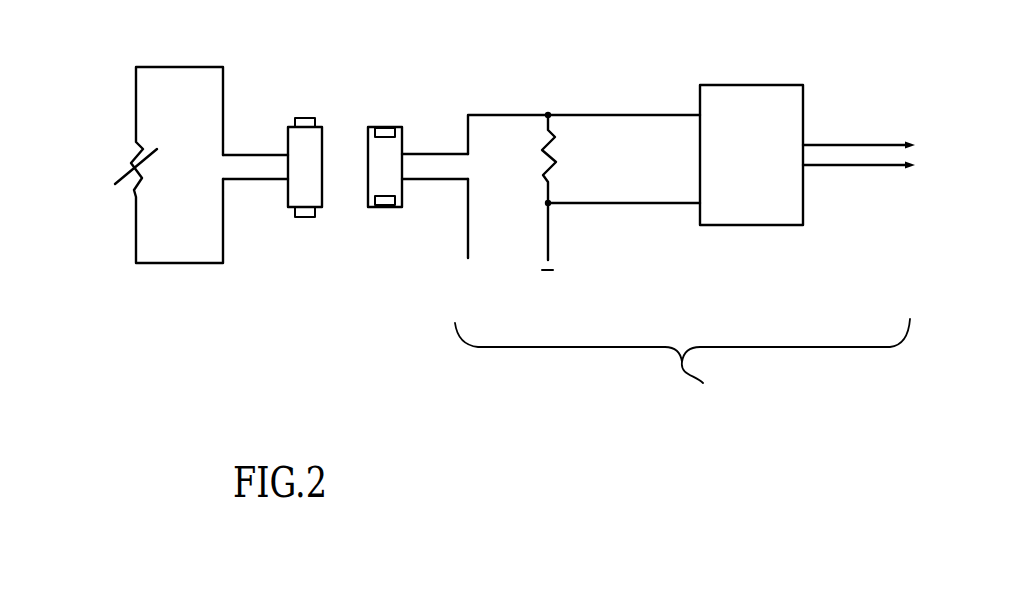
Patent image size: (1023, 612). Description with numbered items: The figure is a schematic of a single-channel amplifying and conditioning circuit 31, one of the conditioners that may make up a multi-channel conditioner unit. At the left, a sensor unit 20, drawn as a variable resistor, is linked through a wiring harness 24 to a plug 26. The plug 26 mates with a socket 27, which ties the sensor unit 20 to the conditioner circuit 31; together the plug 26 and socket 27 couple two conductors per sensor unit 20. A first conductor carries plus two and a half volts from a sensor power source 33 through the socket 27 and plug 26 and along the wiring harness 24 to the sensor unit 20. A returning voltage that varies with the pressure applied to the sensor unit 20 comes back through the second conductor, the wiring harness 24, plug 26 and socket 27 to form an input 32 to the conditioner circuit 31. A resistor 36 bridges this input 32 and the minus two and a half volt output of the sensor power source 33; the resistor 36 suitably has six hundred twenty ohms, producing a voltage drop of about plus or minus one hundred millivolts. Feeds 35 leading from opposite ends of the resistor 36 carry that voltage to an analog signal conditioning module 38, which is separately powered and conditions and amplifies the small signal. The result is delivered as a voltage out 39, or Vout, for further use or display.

The sensor unit 20 is at (127, 162).
The wiring harness 24 is at (257, 180).
The plug 26 is at (305, 118).
The socket 27 is at (383, 127).
The amplifying and conditioning circuit 31 is at (682, 366).
The input 32 is at (465, 100).
The sensor power source 33 is at (502, 283).
The feeds 35 is at (620, 214).
The resistor 36 is at (553, 160).
The analog signal conditioning module 38 is at (720, 85).
The voltage out 39 is at (952, 156).